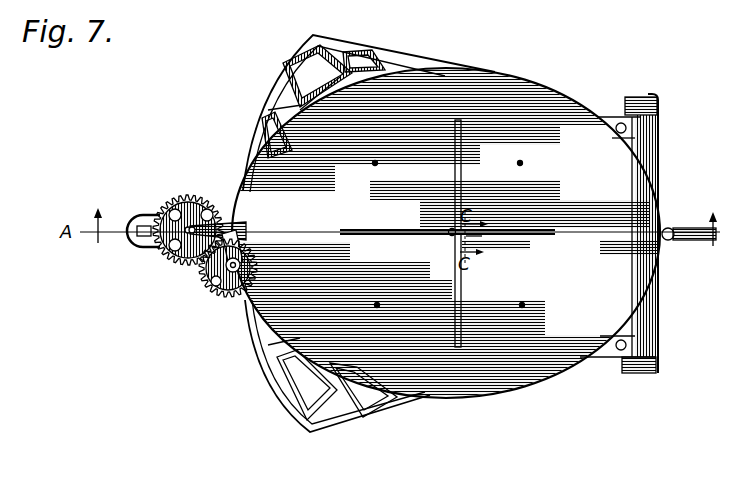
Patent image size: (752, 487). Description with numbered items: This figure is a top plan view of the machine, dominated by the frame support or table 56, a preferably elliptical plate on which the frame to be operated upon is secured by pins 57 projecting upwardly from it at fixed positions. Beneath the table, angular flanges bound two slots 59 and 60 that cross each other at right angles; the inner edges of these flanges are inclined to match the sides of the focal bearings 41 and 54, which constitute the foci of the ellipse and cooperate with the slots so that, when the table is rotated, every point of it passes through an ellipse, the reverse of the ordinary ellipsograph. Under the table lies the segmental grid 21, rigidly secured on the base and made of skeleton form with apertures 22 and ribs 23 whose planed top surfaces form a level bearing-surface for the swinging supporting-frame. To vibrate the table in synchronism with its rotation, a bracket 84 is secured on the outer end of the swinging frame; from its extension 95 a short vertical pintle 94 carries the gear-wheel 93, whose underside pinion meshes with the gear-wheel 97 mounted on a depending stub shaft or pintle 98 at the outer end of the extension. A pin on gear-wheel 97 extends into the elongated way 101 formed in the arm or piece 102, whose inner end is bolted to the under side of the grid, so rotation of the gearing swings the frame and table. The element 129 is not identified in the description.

The segmental grid 21 is at (366, 76).
The apertures 22 is at (312, 78).
The ribs 23 is at (294, 410).
The focal bearing 41 is at (472, 240).
The focal bearing 54 is at (448, 231).
The frame support or table 56 is at (445, 234).
The pins 57 is at (373, 164).
The slot 59 is at (401, 236).
The slot 60 is at (462, 296).
The bracket 84 is at (232, 222).
The gear-wheel 93 is at (216, 298).
The pintle 94 is at (238, 262).
The extension 95 is at (196, 272).
The gear-wheel 97 is at (164, 257).
The stub shaft or pintle 98 is at (165, 213).
The elongated way 101 is at (145, 226).
The arm or piece 102 is at (135, 241).
The shaft end 129 is at (698, 242).